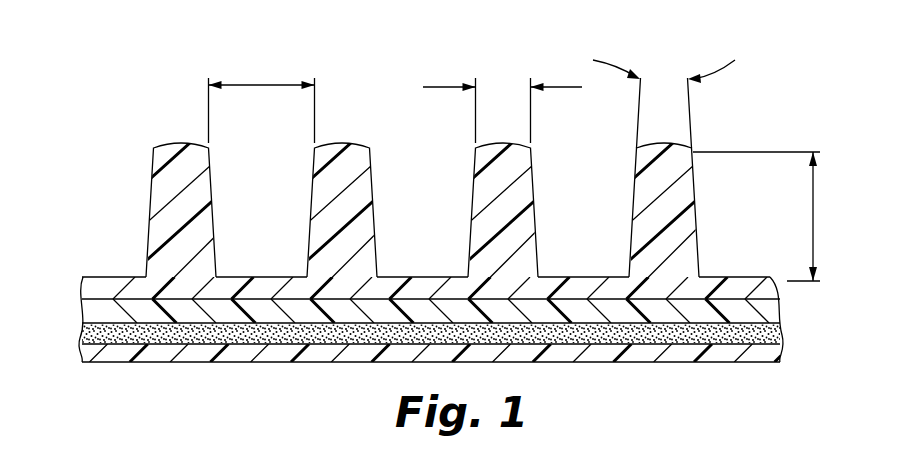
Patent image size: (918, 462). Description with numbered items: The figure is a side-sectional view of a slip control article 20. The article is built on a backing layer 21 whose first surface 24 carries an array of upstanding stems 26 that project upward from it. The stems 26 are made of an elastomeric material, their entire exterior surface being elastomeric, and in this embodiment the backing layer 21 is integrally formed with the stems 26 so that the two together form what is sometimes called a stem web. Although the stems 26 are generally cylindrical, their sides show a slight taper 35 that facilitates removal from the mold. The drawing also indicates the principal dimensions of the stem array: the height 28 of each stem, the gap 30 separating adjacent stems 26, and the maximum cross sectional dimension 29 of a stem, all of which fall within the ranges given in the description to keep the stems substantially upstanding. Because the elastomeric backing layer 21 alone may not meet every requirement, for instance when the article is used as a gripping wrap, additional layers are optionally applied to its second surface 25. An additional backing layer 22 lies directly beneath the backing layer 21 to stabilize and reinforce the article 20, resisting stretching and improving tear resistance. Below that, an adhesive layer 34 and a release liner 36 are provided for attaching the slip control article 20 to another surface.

The slip control article 20 is at (757, 89).
The backing layer 21 is at (97, 288).
The additional backing layer 22 is at (100, 310).
The first surface 24 is at (107, 276).
The second surface 25 is at (150, 290).
The upstanding stems 26 is at (170, 148).
The height 28 is at (812, 220).
The maximum cross sectional dimension 29 is at (437, 87).
The gap 30 is at (265, 85).
The adhesive layer 34 is at (83, 332).
The taper 35 is at (720, 70).
The release liner 36 is at (215, 352).